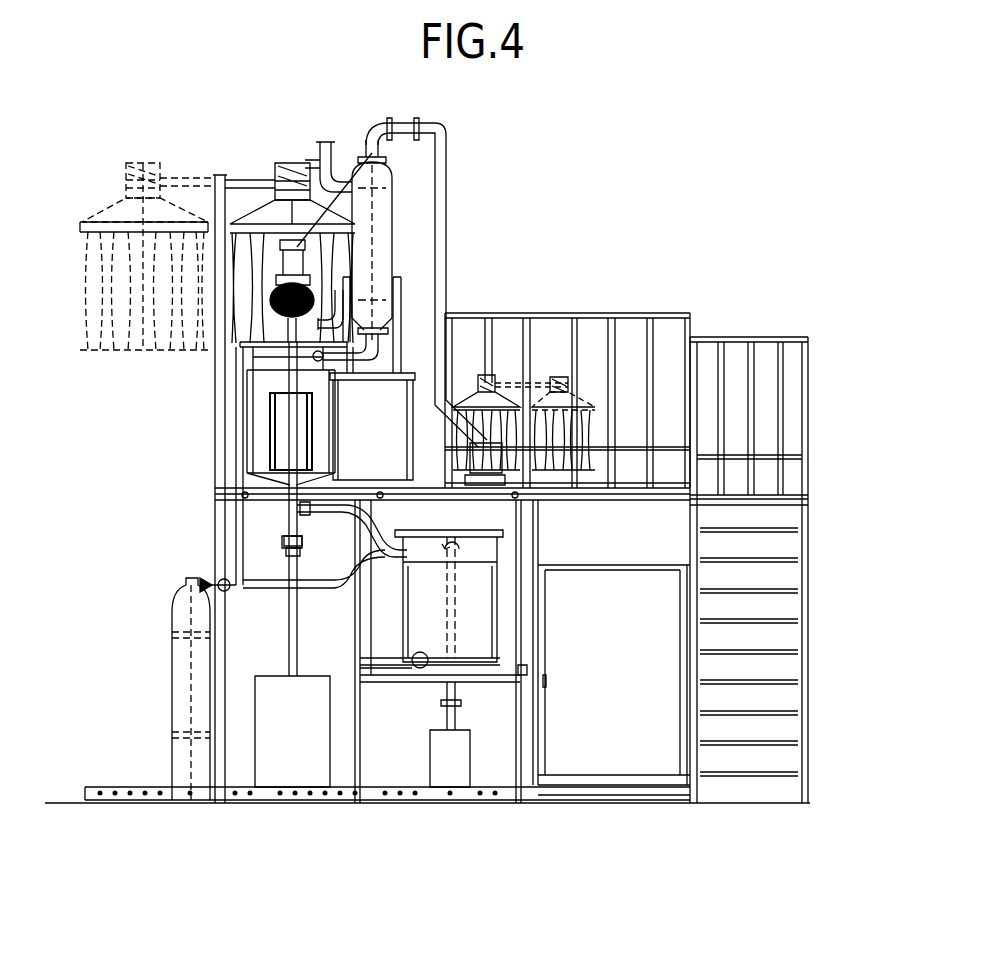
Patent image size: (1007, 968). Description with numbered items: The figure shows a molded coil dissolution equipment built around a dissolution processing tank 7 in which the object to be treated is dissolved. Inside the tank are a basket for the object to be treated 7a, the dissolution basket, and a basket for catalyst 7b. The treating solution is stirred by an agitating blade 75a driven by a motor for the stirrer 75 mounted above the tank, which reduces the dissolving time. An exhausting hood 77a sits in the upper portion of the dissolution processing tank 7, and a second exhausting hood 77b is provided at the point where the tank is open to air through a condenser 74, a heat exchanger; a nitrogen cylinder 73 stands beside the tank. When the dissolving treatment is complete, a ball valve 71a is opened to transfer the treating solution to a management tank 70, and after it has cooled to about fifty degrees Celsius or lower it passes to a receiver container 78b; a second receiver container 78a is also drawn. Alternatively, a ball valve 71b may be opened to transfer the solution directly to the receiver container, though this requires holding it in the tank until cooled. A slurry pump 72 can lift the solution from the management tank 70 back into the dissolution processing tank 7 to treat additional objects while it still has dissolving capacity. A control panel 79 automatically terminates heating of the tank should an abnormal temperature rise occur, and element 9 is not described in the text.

The dissolution processing tank 7 is at (227, 418).
The basket for object to be treated 7a is at (250, 437).
The basket for catalyst 7b is at (250, 393).
The agitator shaft 9 is at (250, 462).
The management tank 70 is at (497, 573).
The ball valve 71a is at (280, 542).
The ball valve 71b is at (205, 545).
The slurry pump 72 is at (423, 657).
The nitrogen cylinder 73 is at (172, 662).
The condenser 74 is at (392, 242).
The motor for stirrer 75 is at (372, 153).
The agitating blade 75a is at (247, 350).
The exhausting hood 77a is at (253, 207).
The exhausting hood 77b is at (506, 383).
The receiver container 78a is at (327, 768).
The receiver container 78b is at (470, 768).
The control panel 79 is at (613, 753).